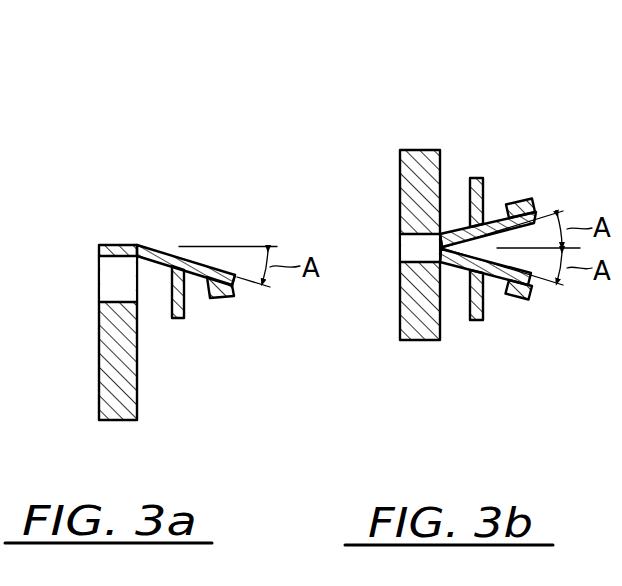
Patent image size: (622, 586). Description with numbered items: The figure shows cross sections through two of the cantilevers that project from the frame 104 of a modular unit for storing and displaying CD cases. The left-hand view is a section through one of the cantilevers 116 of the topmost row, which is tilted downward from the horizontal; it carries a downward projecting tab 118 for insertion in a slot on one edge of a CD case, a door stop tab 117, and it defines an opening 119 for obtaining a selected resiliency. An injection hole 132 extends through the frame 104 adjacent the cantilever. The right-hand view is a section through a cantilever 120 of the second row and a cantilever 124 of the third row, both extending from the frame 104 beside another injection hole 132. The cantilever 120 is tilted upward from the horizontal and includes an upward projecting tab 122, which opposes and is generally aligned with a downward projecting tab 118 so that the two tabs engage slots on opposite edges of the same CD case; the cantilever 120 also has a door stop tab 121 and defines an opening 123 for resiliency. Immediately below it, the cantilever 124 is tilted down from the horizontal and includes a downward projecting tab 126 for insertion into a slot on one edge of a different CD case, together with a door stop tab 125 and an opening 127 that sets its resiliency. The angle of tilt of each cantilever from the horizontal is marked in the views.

In FIG. 3a, the frame 104 is at (107, 365).
In FIG. 3b, the frame 104 is at (404, 181).
In FIG. 3a, the injection hole 132 is at (105, 273).
In FIG. 3b, the injection hole 132 is at (406, 252).
In FIG. 3a, the opening 119 is at (156, 251).
In FIG. 3a, the door stop tab 117 is at (175, 320).
In FIG. 3a, the downward projecting tab 118 is at (214, 298).
In FIG. 3a, the cantilever 116 is at (235, 286).
In FIG. 3b, the cantilever 120 is at (500, 220).
In FIG. 3b, the door stop tab 121 is at (456, 232).
In FIG. 3b, the upward projecting tab 122 is at (517, 203).
In FIG. 3b, the opening 123 is at (480, 178).
In FIG. 3b, the cantilever 124 is at (493, 281).
In FIG. 3b, the door stop tab 125 is at (477, 320).
In FIG. 3b, the downward projecting tab 126 is at (517, 298).
In FIG. 3b, the opening 127 is at (455, 263).